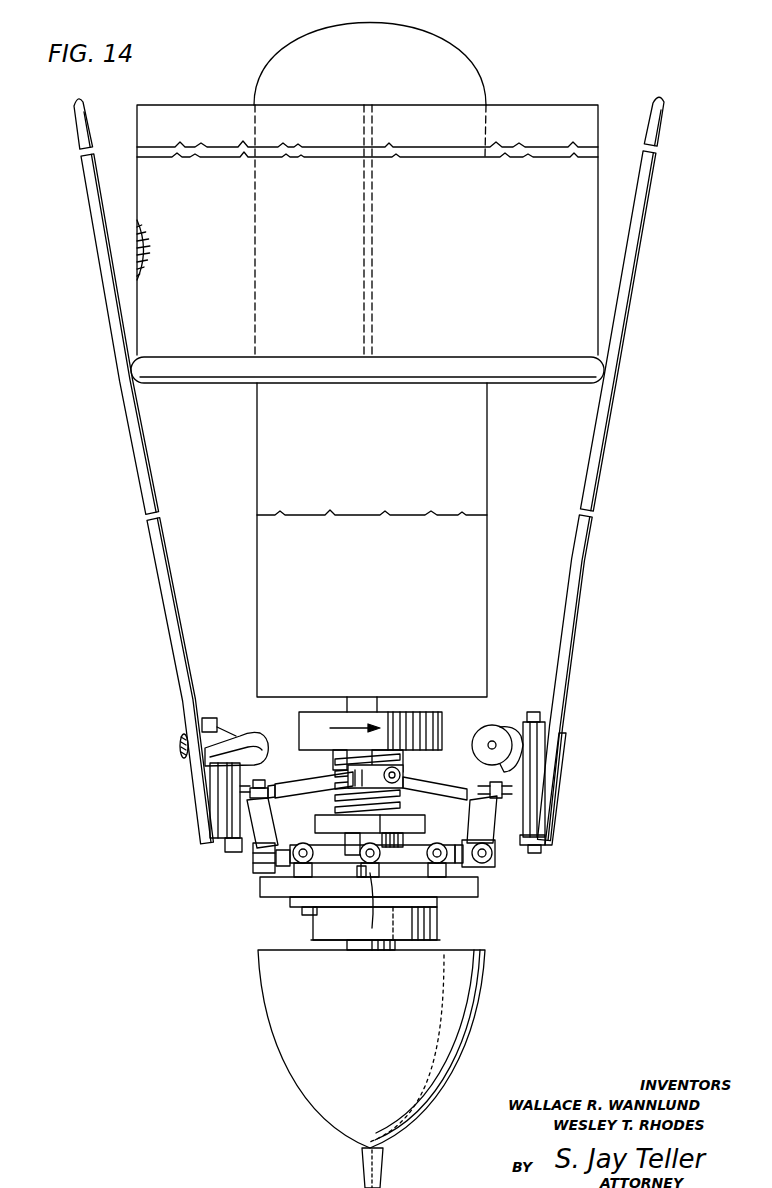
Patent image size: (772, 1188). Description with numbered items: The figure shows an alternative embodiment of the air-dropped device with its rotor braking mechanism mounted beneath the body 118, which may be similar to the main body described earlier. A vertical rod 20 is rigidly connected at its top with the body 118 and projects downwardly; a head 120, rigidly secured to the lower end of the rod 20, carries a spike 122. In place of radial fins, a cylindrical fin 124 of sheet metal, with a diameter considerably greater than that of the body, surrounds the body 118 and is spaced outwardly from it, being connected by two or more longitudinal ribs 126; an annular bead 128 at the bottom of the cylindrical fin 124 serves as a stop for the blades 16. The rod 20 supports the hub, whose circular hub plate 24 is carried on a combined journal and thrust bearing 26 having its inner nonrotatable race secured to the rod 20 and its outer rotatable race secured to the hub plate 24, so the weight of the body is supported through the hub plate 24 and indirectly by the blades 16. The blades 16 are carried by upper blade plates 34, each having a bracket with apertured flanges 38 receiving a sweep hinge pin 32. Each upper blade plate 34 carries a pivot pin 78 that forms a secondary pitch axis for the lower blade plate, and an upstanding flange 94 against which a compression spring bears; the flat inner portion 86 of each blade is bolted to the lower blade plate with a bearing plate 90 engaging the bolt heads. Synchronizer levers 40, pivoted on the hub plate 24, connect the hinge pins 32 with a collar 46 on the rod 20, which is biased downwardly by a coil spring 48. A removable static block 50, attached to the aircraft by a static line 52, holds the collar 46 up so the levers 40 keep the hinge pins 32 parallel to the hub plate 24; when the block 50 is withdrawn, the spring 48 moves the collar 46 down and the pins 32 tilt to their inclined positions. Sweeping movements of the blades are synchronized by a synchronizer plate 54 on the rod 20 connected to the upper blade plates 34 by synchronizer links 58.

The blades 16 is at (123, 435).
The rod 20 is at (355, 707).
The hub plate 24 is at (267, 889).
The bearing 26 is at (438, 934).
The hinge pins 32 is at (252, 863).
The upper blade plates 34 is at (265, 822).
The flanges 38 is at (480, 816).
The synchronizer levers 40 is at (347, 859).
The collar 46 is at (411, 822).
The coil spring 48 is at (370, 835).
The static block 50 is at (362, 877).
The static line 52 is at (369, 926).
The synchronizer plate 54 is at (407, 712).
The synchronizer links 58 is at (305, 777).
The pivot pin 78 is at (224, 829).
The inner portion 86 is at (549, 677).
The bearing plate 90 is at (209, 800).
The flange 94 is at (488, 730).
The body 118 is at (487, 438).
The head 120 is at (460, 1044).
The spike 122 is at (384, 1168).
The cylindrical fin 124 is at (137, 176).
The longitudinal ribs 126 is at (364, 213).
The annular bead 128 is at (273, 362).